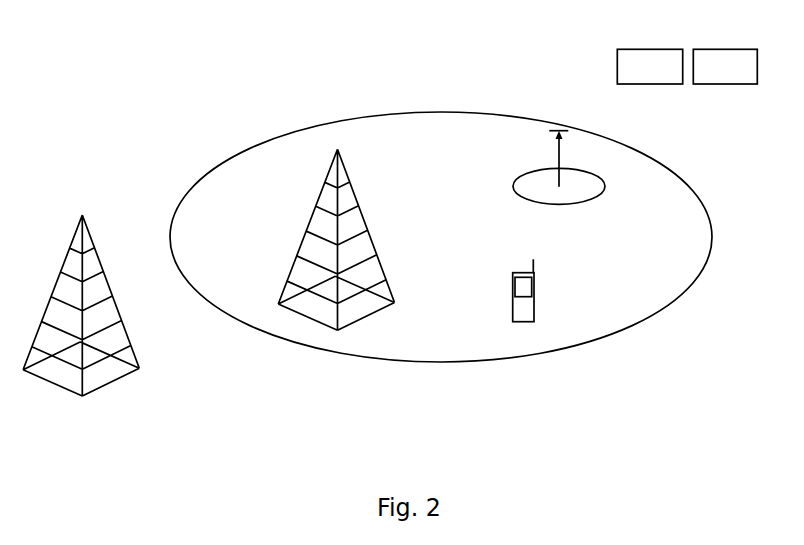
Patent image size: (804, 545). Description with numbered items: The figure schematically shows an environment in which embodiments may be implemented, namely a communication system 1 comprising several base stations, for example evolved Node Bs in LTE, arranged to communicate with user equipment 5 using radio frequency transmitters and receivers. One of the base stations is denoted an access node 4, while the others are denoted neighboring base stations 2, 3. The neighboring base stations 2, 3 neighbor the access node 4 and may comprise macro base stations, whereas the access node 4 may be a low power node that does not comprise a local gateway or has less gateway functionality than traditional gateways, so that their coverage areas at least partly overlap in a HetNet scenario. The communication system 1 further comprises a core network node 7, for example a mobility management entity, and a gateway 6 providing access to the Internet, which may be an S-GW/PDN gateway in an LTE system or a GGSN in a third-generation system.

The communication system 1 is at (112, 62).
The neighboring base station 2 is at (348, 198).
The neighboring base station 3 is at (92, 263).
The access node 4 is at (559, 153).
The user equipment 5 is at (534, 288).
The gateway 6 is at (754, 49).
The core network node 7 is at (677, 49).